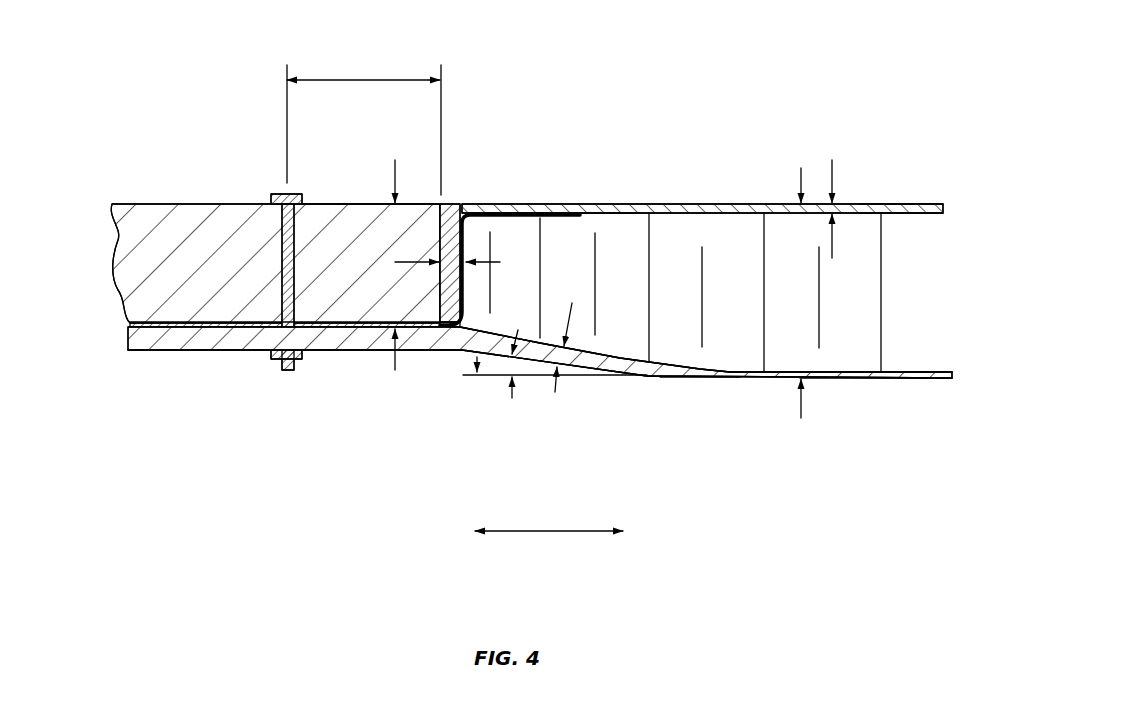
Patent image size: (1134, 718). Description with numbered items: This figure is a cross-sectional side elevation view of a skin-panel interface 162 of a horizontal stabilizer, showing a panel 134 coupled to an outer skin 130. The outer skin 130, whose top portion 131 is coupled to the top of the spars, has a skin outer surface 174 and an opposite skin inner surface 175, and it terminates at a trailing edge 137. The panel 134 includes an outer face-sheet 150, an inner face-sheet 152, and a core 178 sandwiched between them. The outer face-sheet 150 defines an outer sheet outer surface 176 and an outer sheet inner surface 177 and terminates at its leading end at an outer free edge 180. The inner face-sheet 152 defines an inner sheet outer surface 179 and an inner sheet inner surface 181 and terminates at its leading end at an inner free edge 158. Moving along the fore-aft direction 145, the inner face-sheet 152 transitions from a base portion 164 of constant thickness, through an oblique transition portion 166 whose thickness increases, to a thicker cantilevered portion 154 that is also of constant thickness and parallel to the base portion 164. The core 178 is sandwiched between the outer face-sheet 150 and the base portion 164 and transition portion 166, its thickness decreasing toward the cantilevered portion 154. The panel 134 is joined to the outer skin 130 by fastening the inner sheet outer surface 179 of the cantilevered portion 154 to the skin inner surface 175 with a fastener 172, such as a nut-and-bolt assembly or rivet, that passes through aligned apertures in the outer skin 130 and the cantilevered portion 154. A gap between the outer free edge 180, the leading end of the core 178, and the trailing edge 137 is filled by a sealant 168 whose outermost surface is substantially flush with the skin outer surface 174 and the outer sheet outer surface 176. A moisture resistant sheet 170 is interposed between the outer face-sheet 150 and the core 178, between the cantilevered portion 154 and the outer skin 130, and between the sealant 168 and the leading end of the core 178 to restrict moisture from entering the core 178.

The outer skin 130 is at (320, 201).
The top portion 131 is at (373, 204).
The panel 134 is at (764, 202).
The trailing edge 137 is at (450, 326).
The fore-aft direction 145 is at (578, 533).
The outer face-sheet 150 is at (680, 212).
The inner face-sheet 152 is at (698, 380).
The cantilevered portion 154 is at (240, 336).
The inner free edge 158 is at (128, 336).
The skin-panel interface 162 is at (455, 131).
The base portion 164 is at (847, 379).
The transition portion 166 is at (592, 369).
The sealant 168 is at (450, 204).
The moisture resistant sheet 170 is at (553, 213).
The fastener 172 is at (279, 191).
The skin outer surface 174 is at (199, 204).
The skin inner surface 175 is at (120, 322).
The outer sheet outer surface 176 is at (882, 204).
The outer sheet inner surface 177 is at (915, 214).
The core 178 is at (847, 352).
The inner sheet outer surface 179 is at (915, 372).
The outer free edge 180 is at (462, 205).
The inner sheet inner surface 181 is at (928, 379).